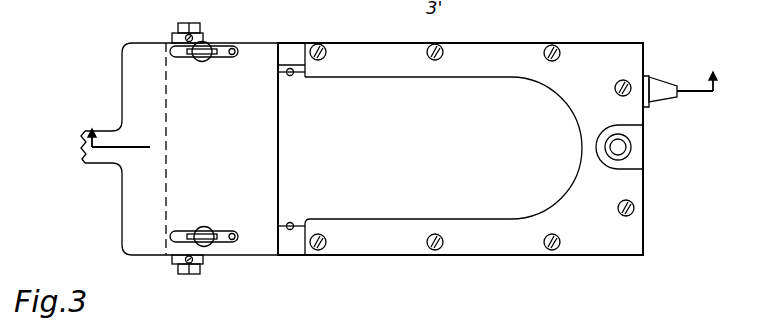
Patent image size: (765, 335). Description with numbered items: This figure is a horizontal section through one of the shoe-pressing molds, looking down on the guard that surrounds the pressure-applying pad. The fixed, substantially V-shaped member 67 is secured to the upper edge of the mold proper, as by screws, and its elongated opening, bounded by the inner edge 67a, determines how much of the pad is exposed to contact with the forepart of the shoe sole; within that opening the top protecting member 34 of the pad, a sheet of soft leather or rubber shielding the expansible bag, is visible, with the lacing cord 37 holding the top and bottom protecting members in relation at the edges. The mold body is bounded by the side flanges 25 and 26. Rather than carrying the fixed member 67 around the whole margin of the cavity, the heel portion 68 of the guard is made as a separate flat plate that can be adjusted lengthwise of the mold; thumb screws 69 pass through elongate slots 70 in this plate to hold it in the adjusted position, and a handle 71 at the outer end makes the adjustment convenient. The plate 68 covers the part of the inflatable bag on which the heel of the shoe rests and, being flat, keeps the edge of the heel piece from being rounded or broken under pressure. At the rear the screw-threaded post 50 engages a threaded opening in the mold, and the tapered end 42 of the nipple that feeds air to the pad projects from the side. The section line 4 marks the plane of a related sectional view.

The fixed substantially V-shaped member 67 is at (508, 44).
The inner edge 67a is at (376, 80).
The top protecting member 34 is at (443, 150).
The heel portion of the guard 68 is at (269, 50).
The side flange 26 is at (298, 45).
The side flange 25 is at (295, 250).
The lacing cord 37 is at (295, 223).
The handle 71 is at (179, 149).
The section line 4- 4 is at (408, 112).
The tapered end 42 is at (663, 82).
The screw-threaded post 50 is at (622, 147).
The elongate slots 70 is at (236, 49).
The thumb screws 69 is at (206, 47).